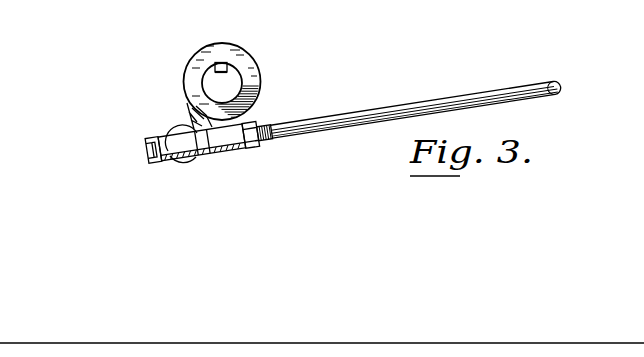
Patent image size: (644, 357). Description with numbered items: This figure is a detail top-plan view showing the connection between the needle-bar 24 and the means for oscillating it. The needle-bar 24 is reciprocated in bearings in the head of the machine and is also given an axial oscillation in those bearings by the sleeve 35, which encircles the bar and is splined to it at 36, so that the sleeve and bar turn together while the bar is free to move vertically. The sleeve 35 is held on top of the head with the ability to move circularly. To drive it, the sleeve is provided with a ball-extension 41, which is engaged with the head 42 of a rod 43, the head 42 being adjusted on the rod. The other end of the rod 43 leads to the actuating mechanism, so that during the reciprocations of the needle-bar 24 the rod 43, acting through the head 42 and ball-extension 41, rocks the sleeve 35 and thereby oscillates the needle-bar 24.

The needle-bar 24 is at (212, 80).
The sleeve 35 is at (259, 79).
The spline 36 is at (223, 63).
The ball-extension 41 is at (182, 133).
The head 42 is at (237, 154).
The rod 43 is at (368, 115).